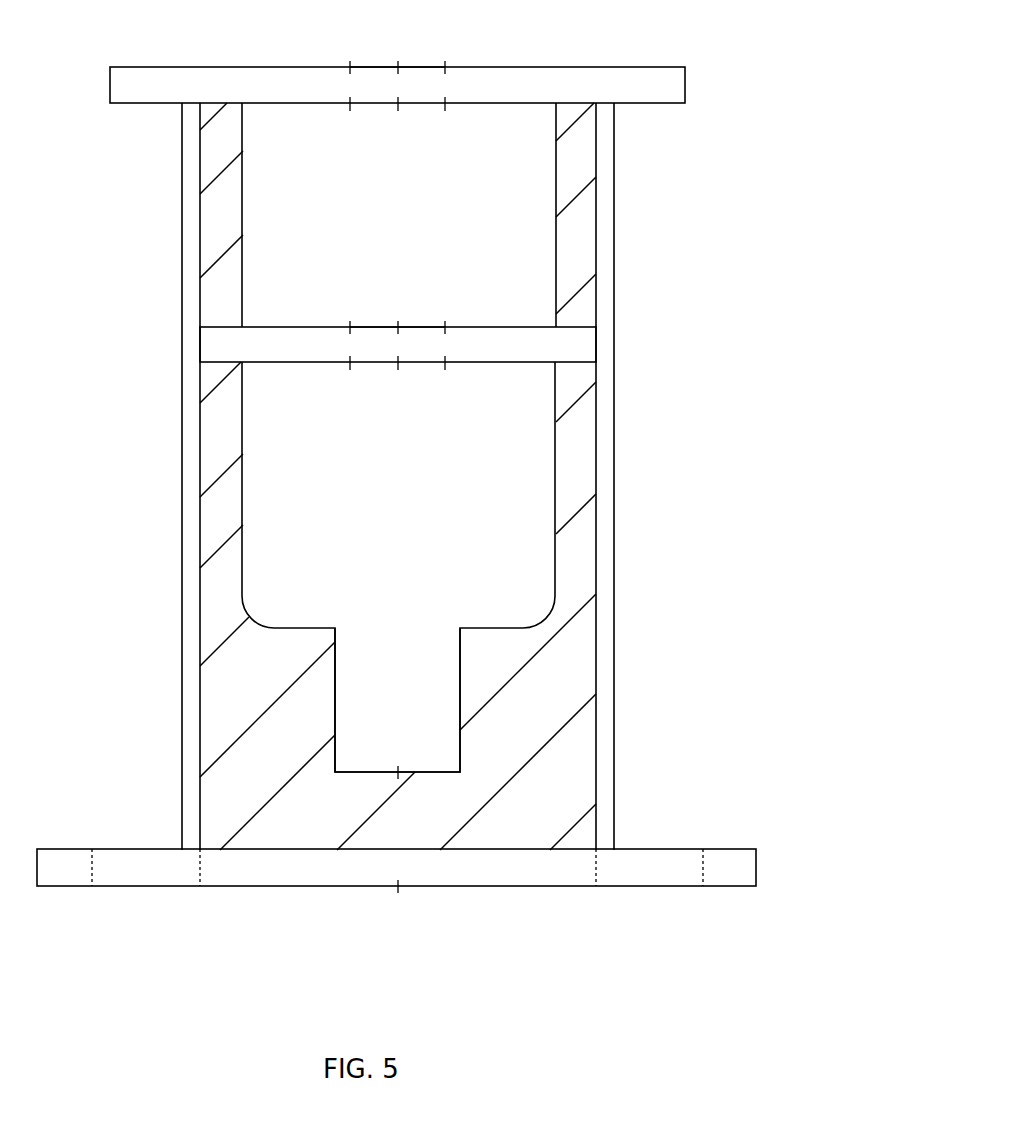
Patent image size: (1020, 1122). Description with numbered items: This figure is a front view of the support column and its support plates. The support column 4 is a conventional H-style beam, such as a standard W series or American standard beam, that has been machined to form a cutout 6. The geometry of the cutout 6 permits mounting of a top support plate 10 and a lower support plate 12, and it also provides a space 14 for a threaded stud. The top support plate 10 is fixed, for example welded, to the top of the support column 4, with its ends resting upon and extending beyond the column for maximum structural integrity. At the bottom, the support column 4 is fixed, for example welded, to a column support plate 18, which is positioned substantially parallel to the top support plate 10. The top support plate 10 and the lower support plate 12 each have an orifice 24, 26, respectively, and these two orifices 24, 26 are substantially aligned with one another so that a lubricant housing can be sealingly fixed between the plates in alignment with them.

The support column 4 is at (618, 221).
The cutout 6 is at (513, 478).
The top support plate 10 is at (688, 85).
The lower support plate 12 is at (577, 346).
The space 14 is at (430, 689).
The column support plate 18 is at (760, 872).
The orifice 24 is at (420, 62).
The orifice 26 is at (413, 322).